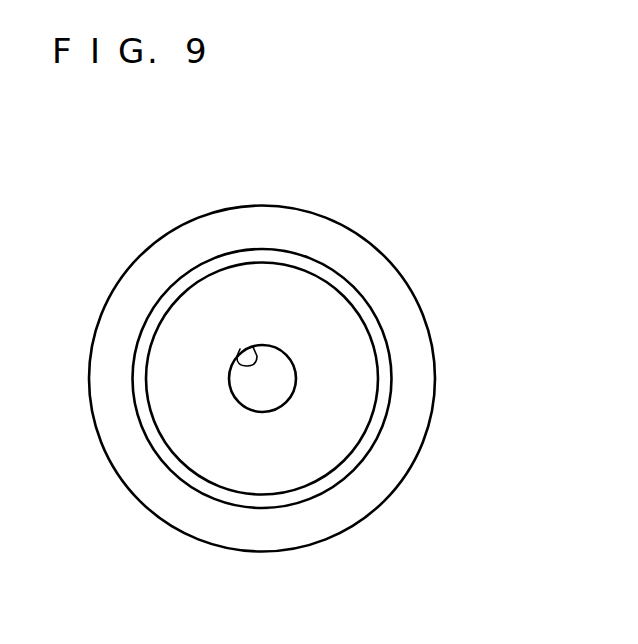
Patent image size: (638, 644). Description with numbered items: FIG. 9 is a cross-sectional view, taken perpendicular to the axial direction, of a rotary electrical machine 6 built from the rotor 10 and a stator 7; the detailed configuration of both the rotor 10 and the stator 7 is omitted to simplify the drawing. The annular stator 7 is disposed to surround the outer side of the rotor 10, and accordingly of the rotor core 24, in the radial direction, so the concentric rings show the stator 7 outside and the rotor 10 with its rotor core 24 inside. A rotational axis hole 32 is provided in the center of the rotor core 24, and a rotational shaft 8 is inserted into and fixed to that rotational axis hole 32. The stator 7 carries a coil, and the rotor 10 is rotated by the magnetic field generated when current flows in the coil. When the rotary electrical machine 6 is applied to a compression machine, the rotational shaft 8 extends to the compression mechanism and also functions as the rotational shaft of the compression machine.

The rotary electrical machine 6 is at (337, 122).
The stator 7 is at (320, 226).
The rotor 10 is at (261, 276).
The rotor core 24 is at (167, 443).
The rotational shaft 8 is at (260, 393).
The rotational axis hole 32 is at (253, 347).